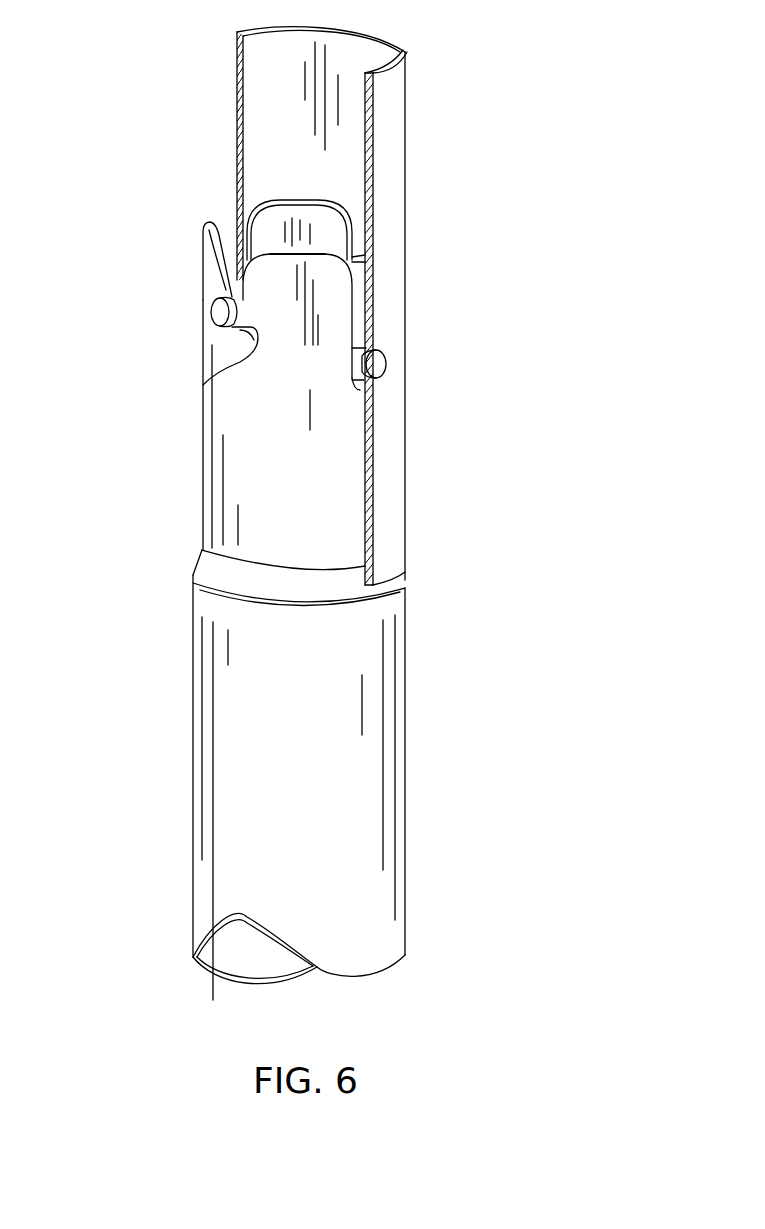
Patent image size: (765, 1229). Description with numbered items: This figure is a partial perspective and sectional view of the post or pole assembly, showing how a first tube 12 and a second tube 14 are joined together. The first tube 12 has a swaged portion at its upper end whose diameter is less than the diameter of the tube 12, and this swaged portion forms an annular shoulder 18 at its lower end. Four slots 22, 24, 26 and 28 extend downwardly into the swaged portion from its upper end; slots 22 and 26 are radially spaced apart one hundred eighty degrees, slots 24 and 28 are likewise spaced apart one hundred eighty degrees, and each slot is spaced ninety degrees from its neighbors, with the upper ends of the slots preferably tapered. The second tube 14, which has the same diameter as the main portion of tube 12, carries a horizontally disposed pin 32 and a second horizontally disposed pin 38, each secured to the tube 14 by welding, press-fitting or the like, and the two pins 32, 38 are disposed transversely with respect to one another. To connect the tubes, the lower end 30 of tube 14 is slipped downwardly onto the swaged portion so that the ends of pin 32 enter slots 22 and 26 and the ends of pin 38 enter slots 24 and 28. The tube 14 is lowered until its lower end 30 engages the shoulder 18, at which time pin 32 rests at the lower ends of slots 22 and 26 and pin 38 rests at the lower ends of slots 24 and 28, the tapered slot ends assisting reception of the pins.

The first tube 12 is at (180, 677).
The second tube 14 is at (427, 182).
The annular shoulder 18 is at (338, 592).
The slot 22 is at (229, 237).
The slot 24 is at (357, 245).
The slot 26 is at (352, 350).
The slot 28 is at (253, 335).
The lower end 30 is at (387, 580).
The pin 32 is at (378, 362).
The pin 38 is at (222, 312).